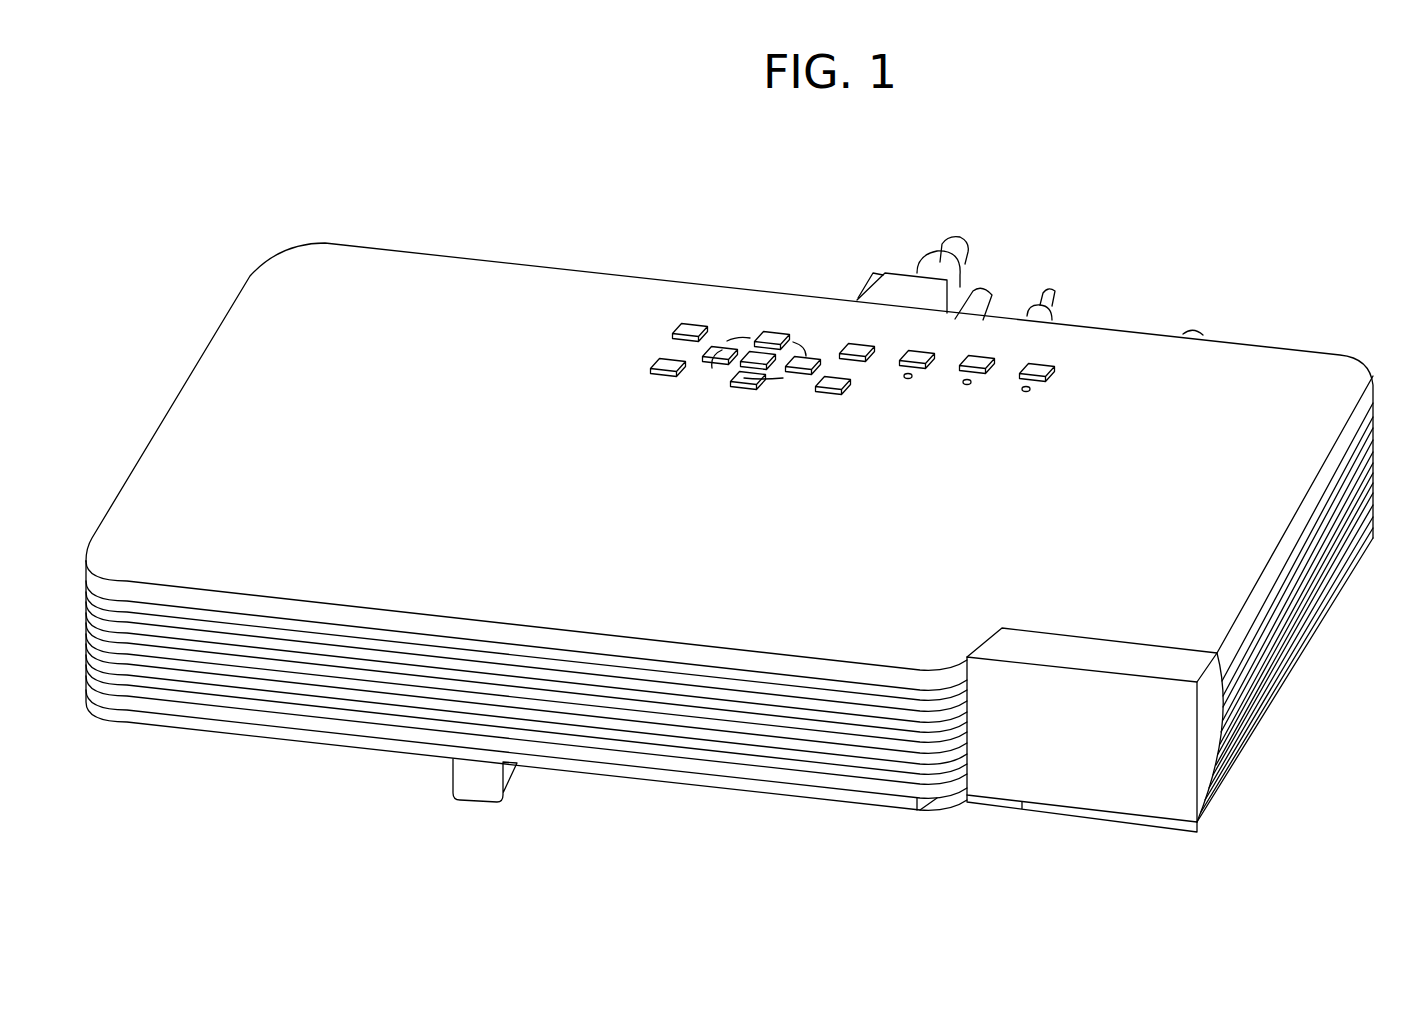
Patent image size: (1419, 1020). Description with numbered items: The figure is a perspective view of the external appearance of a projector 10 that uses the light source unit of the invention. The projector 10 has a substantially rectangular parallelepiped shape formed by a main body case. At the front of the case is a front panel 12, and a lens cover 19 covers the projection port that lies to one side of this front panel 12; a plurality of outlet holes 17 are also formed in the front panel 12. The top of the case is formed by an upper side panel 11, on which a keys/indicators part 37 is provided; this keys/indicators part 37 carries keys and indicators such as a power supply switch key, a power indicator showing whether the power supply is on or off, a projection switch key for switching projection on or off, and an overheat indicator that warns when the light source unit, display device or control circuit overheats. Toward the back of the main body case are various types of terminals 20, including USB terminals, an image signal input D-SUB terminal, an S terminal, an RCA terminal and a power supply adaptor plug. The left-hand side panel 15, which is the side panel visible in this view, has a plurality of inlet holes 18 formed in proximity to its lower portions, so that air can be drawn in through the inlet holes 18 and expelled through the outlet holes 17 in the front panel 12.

The projector 10 is at (665, 222).
The upper side panel 11 is at (466, 297).
The front panel 12 is at (608, 757).
The left-hand side panel 15 is at (1295, 650).
The outlet holes 17 is at (722, 777).
The inlet holes 18 is at (1330, 555).
The lens cover 19 is at (1113, 782).
The terminals 20 is at (1000, 262).
The keys/indicators part 37 is at (774, 313).